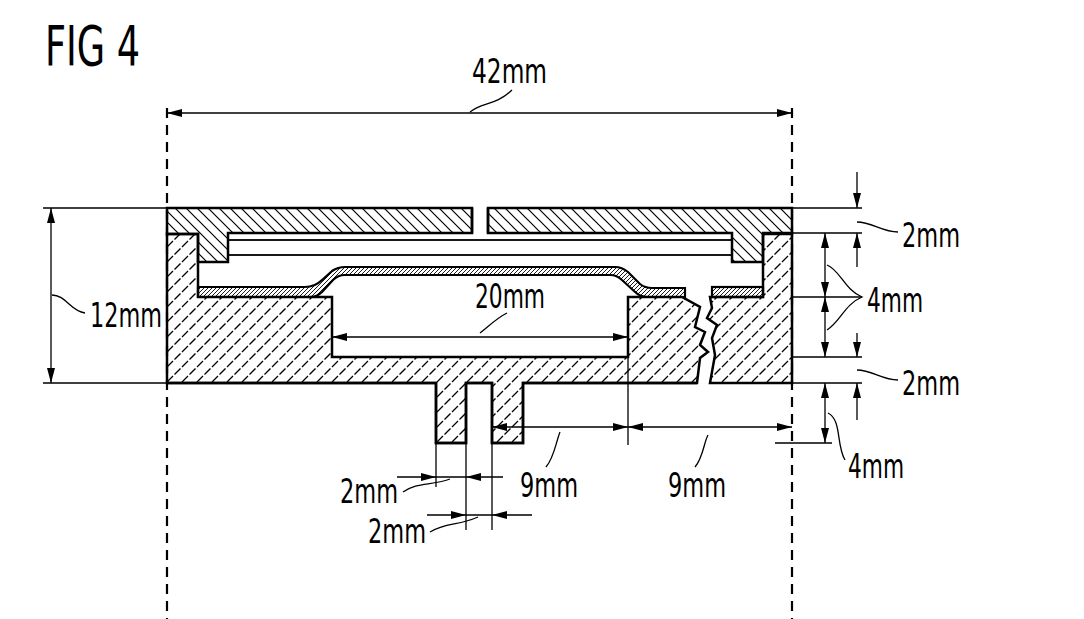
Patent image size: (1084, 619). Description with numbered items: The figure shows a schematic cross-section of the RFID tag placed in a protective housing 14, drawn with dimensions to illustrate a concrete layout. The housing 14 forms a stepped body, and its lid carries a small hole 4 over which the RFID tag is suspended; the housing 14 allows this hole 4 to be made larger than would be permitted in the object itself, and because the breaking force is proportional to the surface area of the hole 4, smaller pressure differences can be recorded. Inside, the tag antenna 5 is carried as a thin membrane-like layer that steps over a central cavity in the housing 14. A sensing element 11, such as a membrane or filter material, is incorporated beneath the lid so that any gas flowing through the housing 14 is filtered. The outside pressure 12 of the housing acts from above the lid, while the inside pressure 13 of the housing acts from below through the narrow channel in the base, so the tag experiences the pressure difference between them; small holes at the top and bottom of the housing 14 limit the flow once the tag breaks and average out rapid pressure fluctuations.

The hole 4 is at (478, 207).
The tag antenna 5 is at (190, 292).
The sensing element, e.g. a membrane or filter 11 is at (632, 250).
The outside pressure of the housing 12 is at (278, 190).
The inside pressure of the housing 13 is at (278, 403).
The housing 14 is at (713, 207).